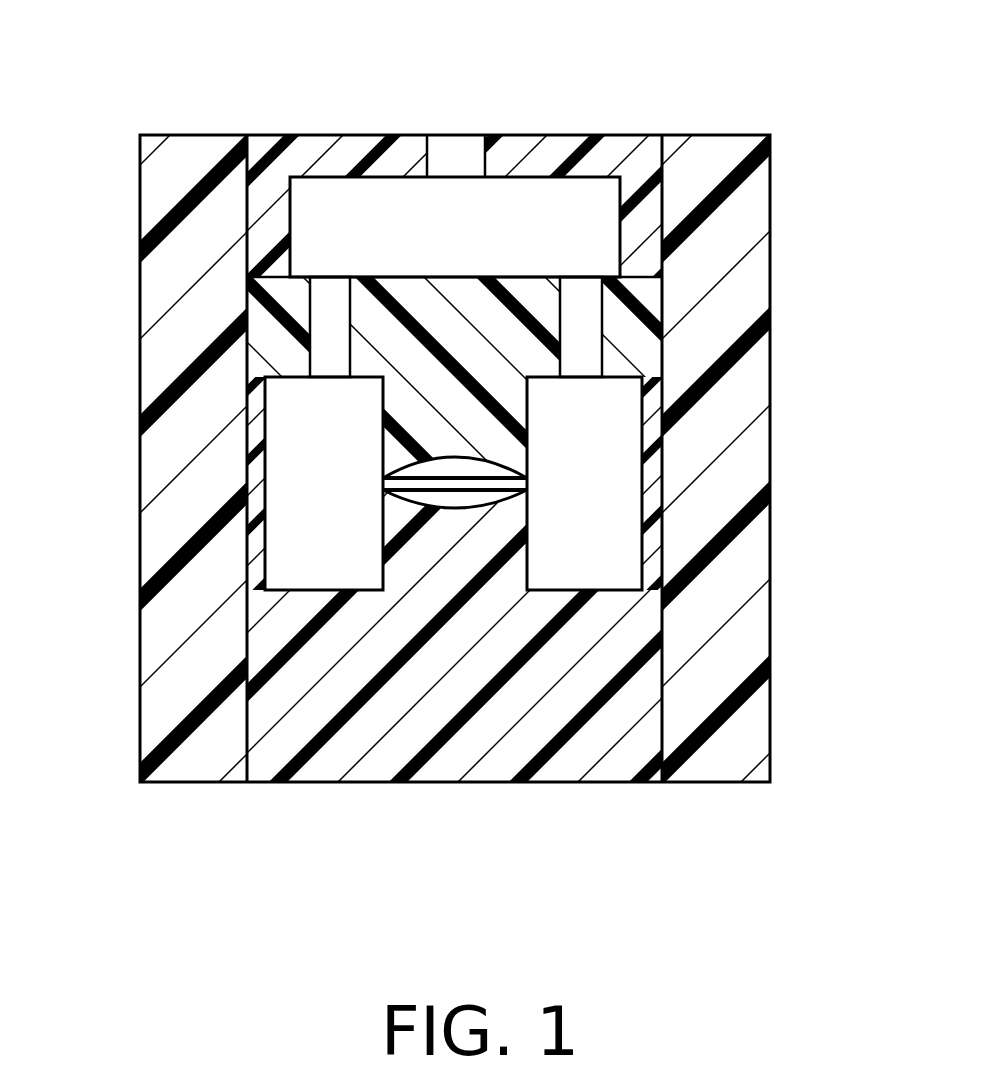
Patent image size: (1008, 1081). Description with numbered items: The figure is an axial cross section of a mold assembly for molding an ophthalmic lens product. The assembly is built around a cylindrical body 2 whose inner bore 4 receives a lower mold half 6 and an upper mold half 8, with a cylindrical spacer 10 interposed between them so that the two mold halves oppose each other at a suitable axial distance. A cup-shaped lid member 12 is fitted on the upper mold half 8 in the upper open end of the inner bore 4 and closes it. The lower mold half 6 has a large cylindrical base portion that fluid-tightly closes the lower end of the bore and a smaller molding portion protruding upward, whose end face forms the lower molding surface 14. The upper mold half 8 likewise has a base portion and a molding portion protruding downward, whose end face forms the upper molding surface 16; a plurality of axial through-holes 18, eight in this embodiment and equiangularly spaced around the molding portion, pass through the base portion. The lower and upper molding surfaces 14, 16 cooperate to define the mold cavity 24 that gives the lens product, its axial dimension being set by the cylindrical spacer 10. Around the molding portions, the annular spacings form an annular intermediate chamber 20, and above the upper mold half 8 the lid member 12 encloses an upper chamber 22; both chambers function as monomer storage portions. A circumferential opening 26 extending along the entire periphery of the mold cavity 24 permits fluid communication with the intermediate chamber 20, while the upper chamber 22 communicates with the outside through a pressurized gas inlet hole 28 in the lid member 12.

The cylindrical body 2 is at (806, 541).
The inner bore 4 is at (247, 713).
The lower mold half 6 is at (569, 808).
The upper mold half 8 is at (515, 258).
The cylindrical spacer 10 is at (660, 448).
The lid member 12 is at (350, 112).
The lower molding surface 14 is at (496, 500).
The upper molding surface 16 is at (465, 463).
The axial through-holes 18 is at (315, 310).
The annular intermediate chamber 20 is at (306, 437).
The upper chamber 22 is at (434, 236).
The mold cavity 24 is at (453, 503).
The circumferential opening 26 is at (364, 488).
The pressurized gas inlet hole 28 is at (437, 147).